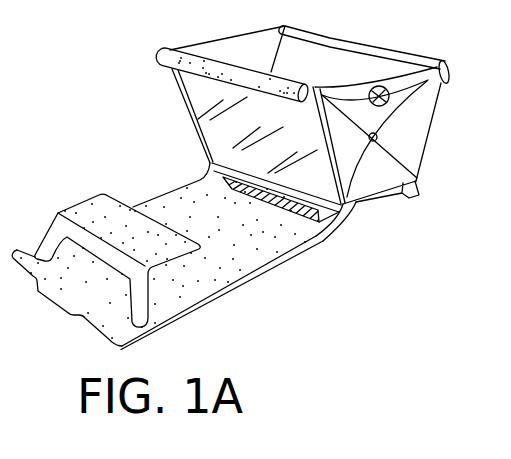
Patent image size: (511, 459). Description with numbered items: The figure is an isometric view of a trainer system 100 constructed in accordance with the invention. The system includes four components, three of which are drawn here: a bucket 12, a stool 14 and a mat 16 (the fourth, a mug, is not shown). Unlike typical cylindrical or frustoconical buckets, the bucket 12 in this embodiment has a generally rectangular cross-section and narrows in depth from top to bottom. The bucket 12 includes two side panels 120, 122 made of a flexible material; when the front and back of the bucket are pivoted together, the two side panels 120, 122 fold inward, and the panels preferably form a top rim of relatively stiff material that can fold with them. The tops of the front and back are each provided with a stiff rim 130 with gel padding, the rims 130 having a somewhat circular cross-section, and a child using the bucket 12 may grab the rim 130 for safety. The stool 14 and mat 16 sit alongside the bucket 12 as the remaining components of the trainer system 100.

The trainer system 100 is at (92, 80).
The bucket 12 is at (435, 109).
The stool 14 is at (160, 298).
The mat 16 is at (245, 255).
The side panel 120 is at (250, 50).
The side panel 122 is at (413, 84).
The rim 130 is at (177, 55).